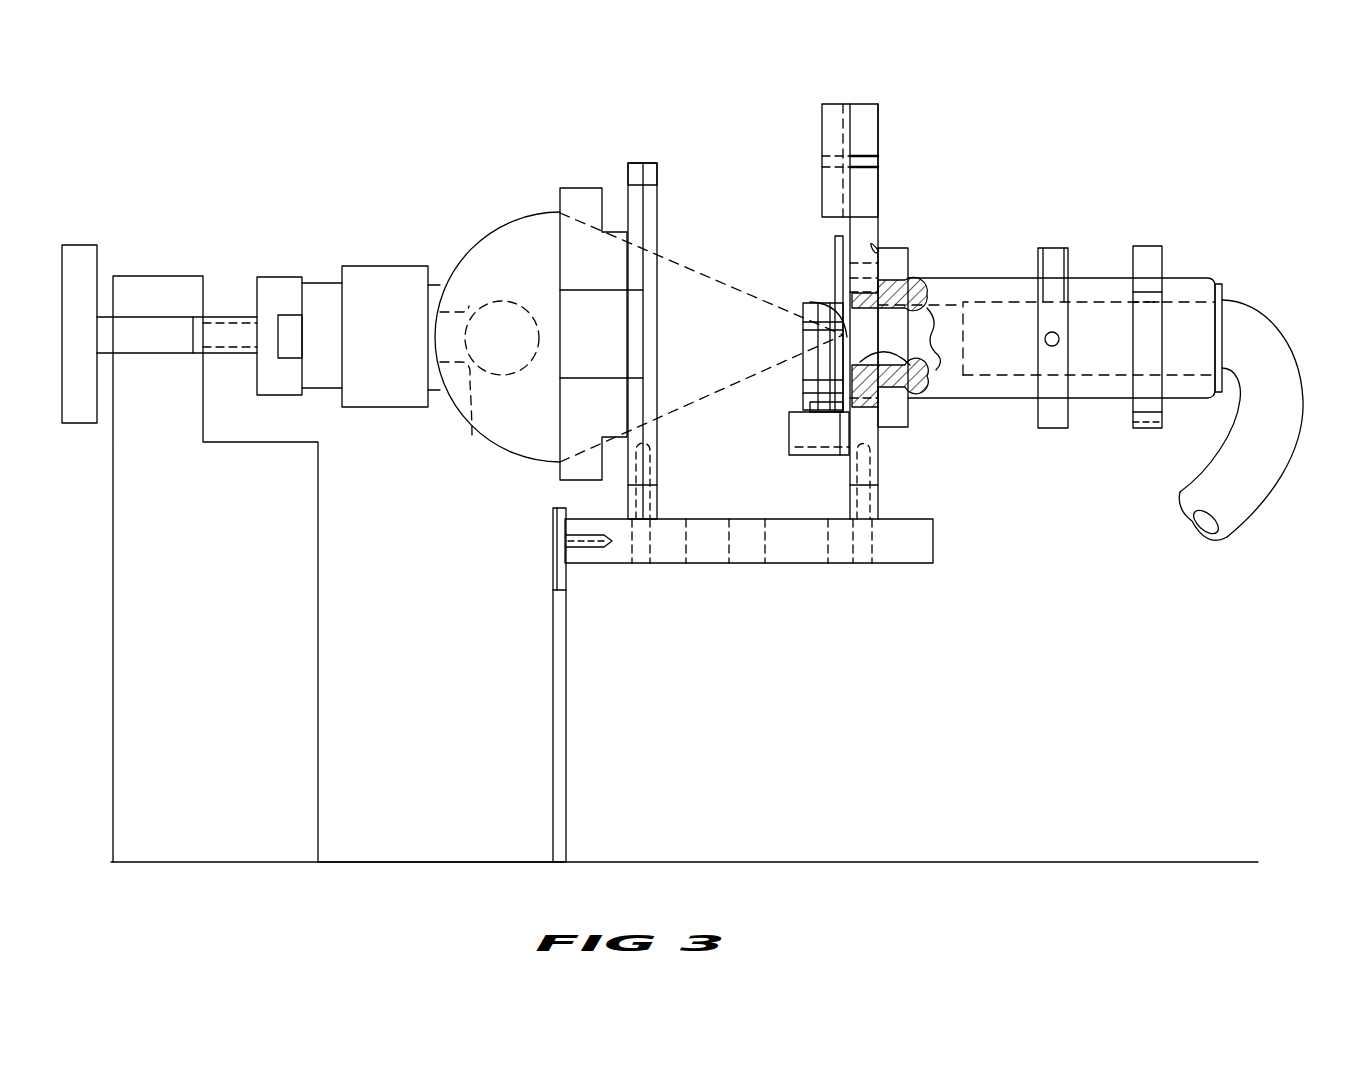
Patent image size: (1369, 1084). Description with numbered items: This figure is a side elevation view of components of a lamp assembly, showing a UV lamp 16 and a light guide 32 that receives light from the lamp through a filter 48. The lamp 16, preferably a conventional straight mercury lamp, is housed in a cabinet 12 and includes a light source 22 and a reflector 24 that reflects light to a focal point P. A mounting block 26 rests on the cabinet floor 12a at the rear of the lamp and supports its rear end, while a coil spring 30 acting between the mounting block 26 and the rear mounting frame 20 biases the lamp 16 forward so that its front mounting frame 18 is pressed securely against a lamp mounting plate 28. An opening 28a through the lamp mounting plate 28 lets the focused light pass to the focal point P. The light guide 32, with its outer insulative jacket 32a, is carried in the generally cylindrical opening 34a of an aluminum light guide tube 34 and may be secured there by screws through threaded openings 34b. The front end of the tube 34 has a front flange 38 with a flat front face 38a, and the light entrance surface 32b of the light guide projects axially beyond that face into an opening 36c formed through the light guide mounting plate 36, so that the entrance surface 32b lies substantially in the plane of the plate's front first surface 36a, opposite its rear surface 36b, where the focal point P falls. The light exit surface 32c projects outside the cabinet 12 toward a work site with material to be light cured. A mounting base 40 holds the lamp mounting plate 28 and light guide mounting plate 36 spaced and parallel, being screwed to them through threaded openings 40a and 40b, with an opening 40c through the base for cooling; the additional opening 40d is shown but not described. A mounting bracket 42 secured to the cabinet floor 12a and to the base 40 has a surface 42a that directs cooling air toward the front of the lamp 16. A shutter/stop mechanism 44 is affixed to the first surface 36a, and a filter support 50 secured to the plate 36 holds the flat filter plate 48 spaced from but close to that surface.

The cabinet 12 is at (768, 862).
The cabinet floor 12a is at (392, 862).
The UV lamp 16 is at (370, 273).
The front mounting frame 18 is at (578, 192).
The rear mounting frame 20 is at (270, 282).
The light source 22 is at (469, 430).
The reflector 24 is at (495, 224).
The mounting block 26 is at (295, 737).
The lamp mounting plate 28 is at (636, 163).
The opening 28a is at (660, 192).
The coil spring 30 is at (228, 317).
The light guide 32 is at (1232, 512).
The outer insulative jacket 32a is at (1262, 347).
The light entrance surface 32b is at (800, 356).
The light exit surface 32c is at (1200, 537).
The light guide tube 34 is at (1040, 250).
The cylindrical opening 34a is at (948, 356).
The threaded openings 34b is at (1056, 338).
The light guide mounting plate 36 is at (866, 182).
The front first surface 36a is at (846, 192).
The rear surface 36b is at (880, 198).
The opening 36c is at (907, 364).
The front flange 38 is at (912, 258).
The front face 38a is at (878, 247).
The mounting base 40 is at (918, 565).
The threaded openings 40a is at (641, 565).
The threaded openings 40b is at (870, 565).
The opening 40c is at (768, 565).
The bolt hole 40d is at (838, 565).
The mounting bracket 42 is at (560, 792).
The surface 42a is at (567, 690).
The shutter/stop mechanism 44 is at (790, 426).
The filter 48 is at (836, 246).
The filter support 50 is at (812, 447).
The focal point P is at (838, 335).